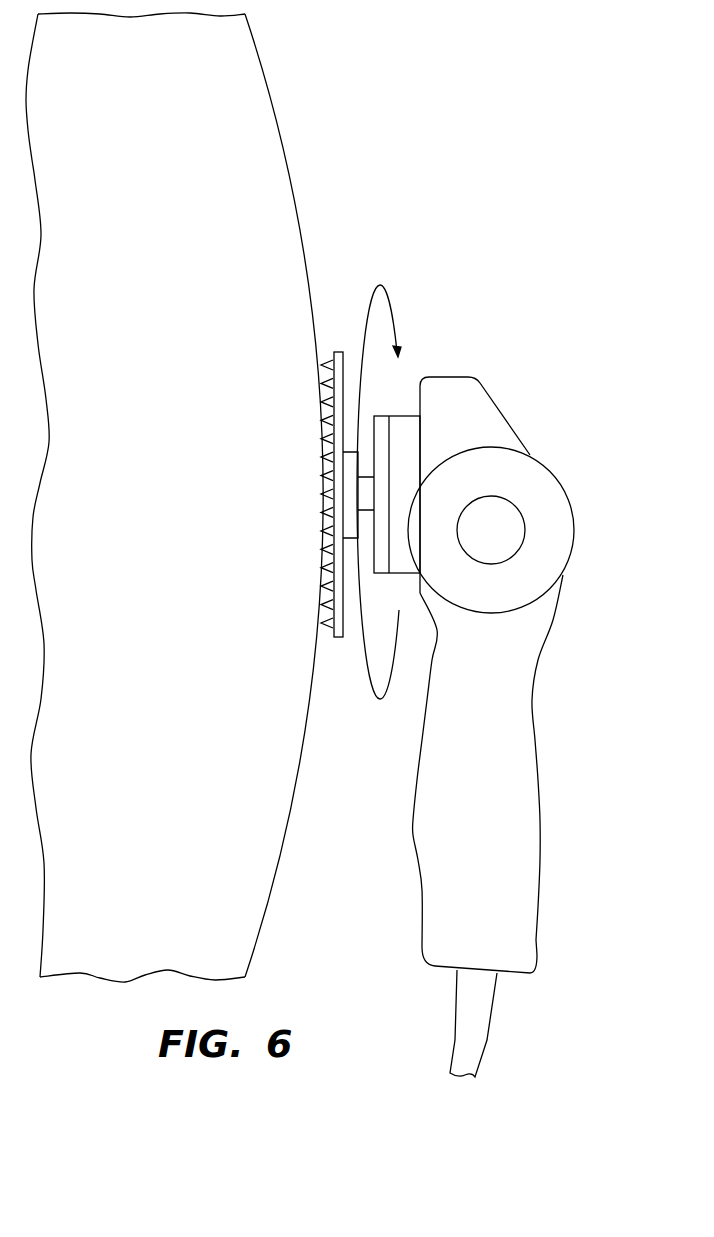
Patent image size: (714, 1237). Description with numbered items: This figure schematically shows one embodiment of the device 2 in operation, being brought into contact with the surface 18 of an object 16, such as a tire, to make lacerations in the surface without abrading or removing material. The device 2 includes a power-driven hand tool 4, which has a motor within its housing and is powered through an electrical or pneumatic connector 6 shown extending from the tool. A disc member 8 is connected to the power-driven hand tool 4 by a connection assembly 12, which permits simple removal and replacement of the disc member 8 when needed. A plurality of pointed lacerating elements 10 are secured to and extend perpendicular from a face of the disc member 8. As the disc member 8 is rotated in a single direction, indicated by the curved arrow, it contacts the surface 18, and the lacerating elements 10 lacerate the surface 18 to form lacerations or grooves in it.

The device 2 is at (545, 404).
The power-driven hand tool 4 is at (527, 668).
The electrical or pneumatic connector 6 is at (481, 1027).
The disc member 8 is at (338, 352).
The pointed lacerating elements 10 is at (330, 383).
The connection assembly 12 is at (354, 599).
The object 16 is at (253, 67).
The surface 18 is at (285, 157).